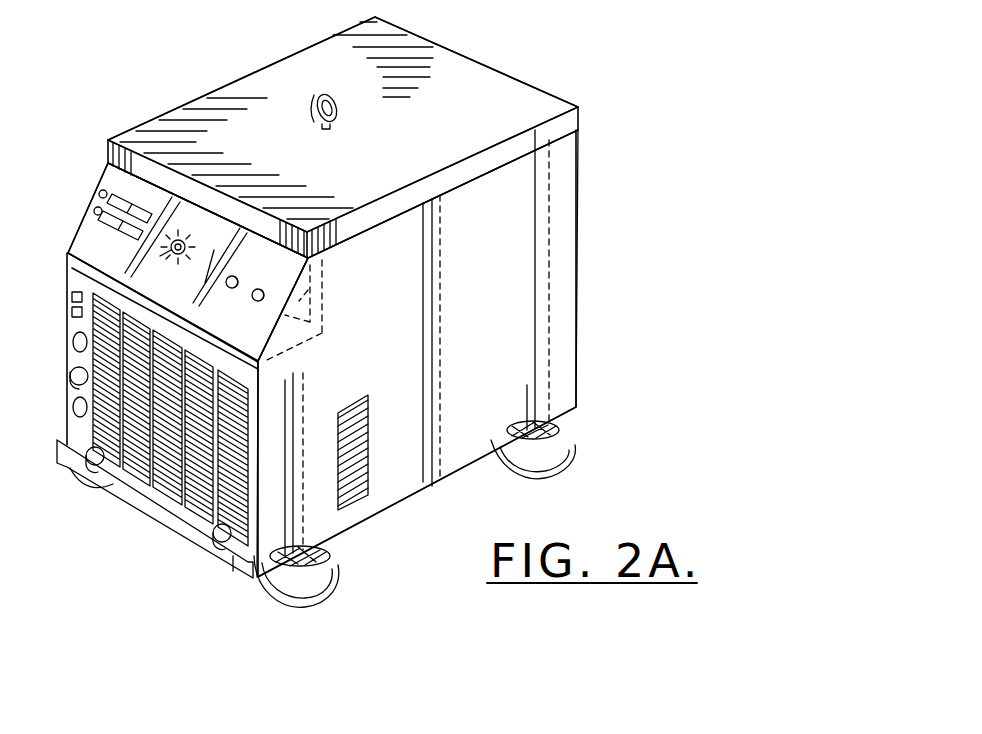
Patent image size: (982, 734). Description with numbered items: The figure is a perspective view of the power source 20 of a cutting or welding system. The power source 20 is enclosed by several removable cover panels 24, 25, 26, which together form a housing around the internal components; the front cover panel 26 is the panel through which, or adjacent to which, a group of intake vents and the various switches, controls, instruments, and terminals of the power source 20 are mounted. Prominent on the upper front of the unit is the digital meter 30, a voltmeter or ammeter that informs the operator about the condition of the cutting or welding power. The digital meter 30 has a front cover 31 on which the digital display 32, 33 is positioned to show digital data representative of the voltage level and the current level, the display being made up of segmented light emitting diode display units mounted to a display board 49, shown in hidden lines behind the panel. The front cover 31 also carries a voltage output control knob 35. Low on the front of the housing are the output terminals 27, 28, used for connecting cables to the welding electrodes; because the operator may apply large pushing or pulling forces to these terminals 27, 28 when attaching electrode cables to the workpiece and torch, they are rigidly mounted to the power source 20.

The power source 20 is at (572, 50).
The removable cover panel 24 is at (533, 100).
The removable cover panel 25 is at (563, 248).
The front cover panel 26 is at (78, 323).
The output terminal 27 is at (93, 462).
The output terminal 28 is at (220, 534).
The digital meter 30 is at (97, 188).
The front cover 31 is at (88, 247).
The digital display 32 is at (137, 202).
The digital display 33 is at (110, 232).
The voltage output control knob 35 is at (169, 263).
The display board 49 is at (322, 290).